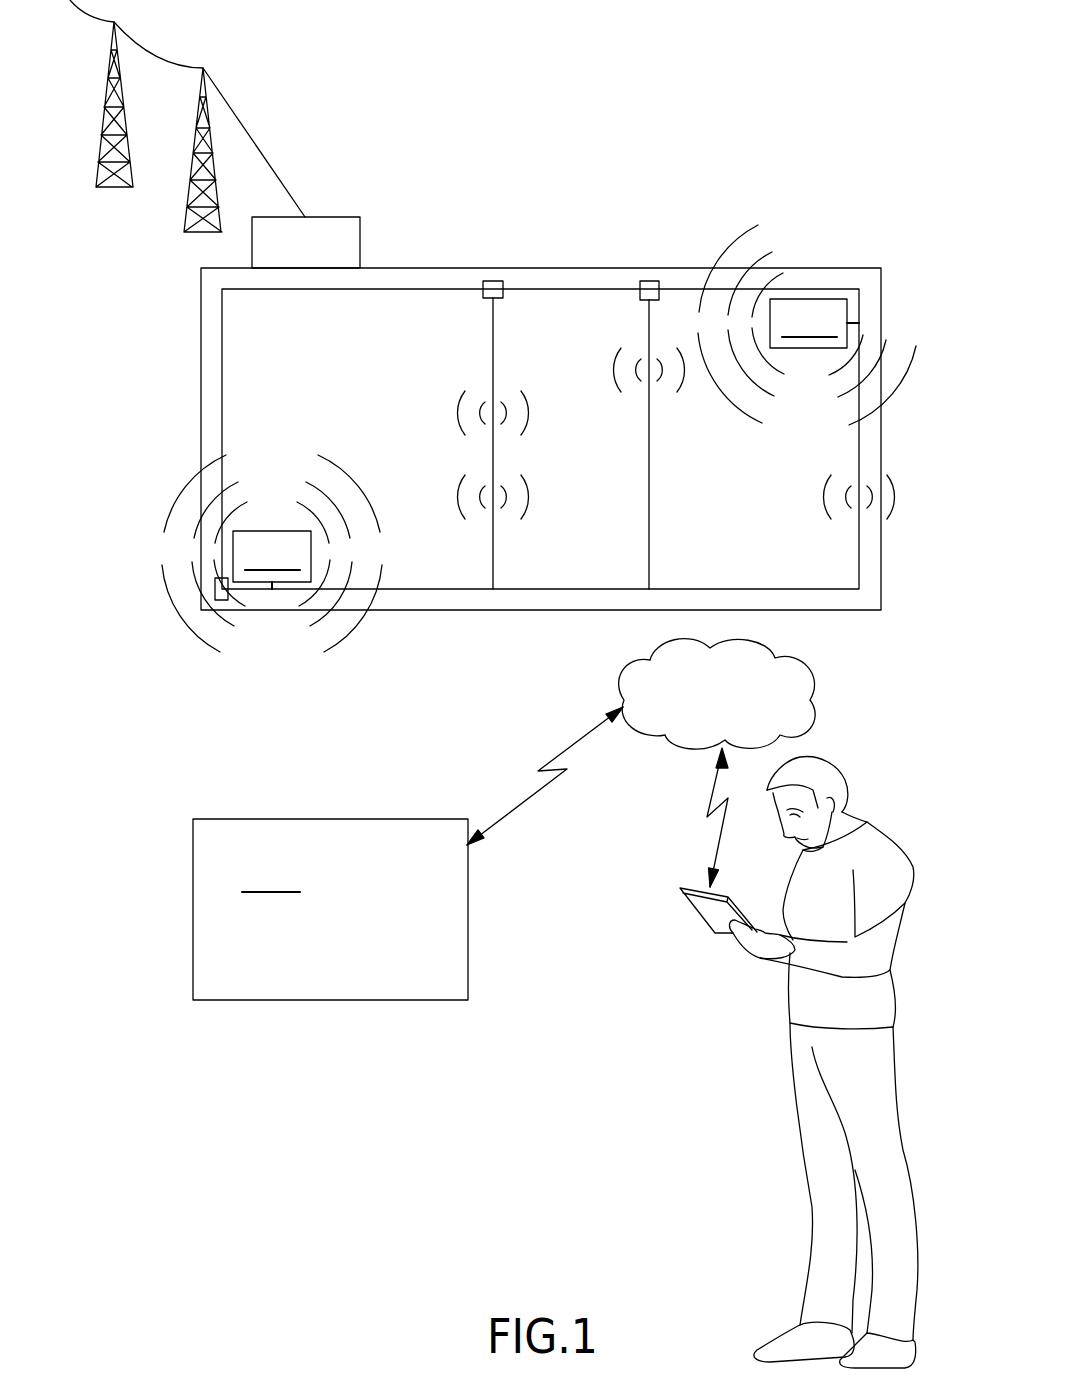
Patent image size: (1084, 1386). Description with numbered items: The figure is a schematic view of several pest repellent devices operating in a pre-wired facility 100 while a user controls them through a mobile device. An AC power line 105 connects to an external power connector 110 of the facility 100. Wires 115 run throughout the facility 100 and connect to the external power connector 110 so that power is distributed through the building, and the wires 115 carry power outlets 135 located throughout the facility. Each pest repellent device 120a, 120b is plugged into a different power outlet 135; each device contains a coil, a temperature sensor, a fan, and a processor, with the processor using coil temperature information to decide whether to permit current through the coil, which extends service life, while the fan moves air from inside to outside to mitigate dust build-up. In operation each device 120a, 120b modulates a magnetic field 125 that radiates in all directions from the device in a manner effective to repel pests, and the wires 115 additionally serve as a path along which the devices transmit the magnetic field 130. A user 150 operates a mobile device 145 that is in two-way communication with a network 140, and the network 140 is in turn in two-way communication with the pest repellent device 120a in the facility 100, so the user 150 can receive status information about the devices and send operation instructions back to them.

The facility 100 is at (800, 142).
The AC power line 105 is at (252, 105).
The external power connector 110 is at (360, 243).
The wires 115 is at (222, 413).
The pest repellent device 120a is at (330, 765).
The pest repellent device 120b is at (807, 325).
The magnetic field 125 is at (342, 450).
The magnetic field 130 is at (530, 425).
The power outlets 135 is at (215, 587).
The network 140 is at (813, 680).
The mobile device 145 is at (693, 905).
The user 150 is at (892, 834).